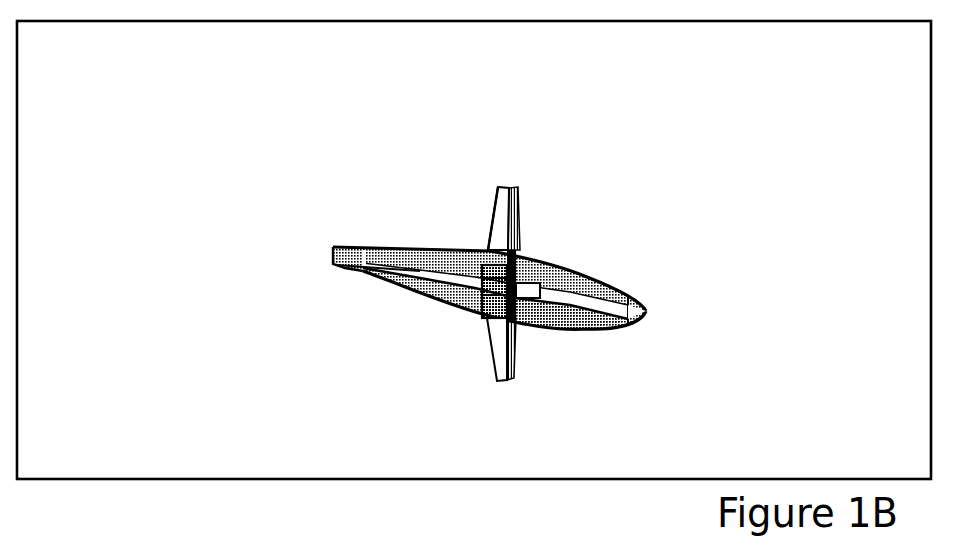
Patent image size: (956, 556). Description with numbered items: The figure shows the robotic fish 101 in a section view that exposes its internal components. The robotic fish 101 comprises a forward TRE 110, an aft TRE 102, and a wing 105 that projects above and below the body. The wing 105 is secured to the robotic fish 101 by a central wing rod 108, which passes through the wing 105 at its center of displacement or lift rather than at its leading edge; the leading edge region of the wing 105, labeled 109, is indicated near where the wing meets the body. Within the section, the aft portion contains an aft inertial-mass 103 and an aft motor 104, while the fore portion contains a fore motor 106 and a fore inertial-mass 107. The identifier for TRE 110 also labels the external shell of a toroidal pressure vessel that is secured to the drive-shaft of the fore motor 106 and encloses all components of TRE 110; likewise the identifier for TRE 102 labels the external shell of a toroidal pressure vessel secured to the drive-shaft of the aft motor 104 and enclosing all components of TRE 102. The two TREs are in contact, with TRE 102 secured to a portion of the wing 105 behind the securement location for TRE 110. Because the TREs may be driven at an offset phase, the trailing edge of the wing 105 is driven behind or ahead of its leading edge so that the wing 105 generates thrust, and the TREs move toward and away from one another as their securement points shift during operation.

The robotic fish 101 is at (482, 252).
The TRE 102 is at (357, 267).
The aft inertial-mass 103 is at (370, 277).
The aft motor 104 is at (482, 312).
The wing 105 is at (517, 190).
The fore motor 106 is at (527, 327).
The fore inertial-mass 107 is at (607, 333).
The central wing rod 108 is at (518, 243).
The fin leading edge 109 is at (490, 249).
The TRE 110 is at (623, 331).